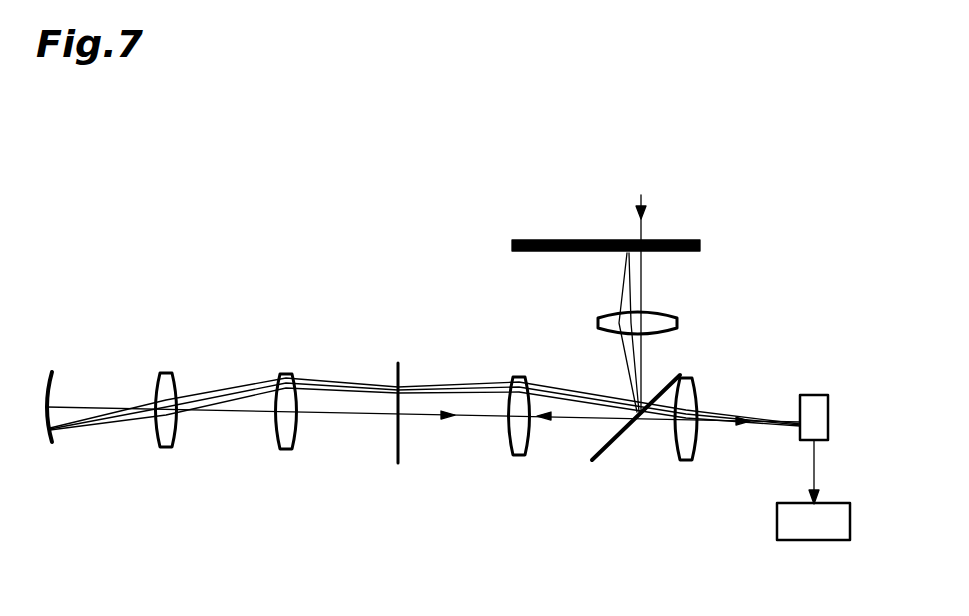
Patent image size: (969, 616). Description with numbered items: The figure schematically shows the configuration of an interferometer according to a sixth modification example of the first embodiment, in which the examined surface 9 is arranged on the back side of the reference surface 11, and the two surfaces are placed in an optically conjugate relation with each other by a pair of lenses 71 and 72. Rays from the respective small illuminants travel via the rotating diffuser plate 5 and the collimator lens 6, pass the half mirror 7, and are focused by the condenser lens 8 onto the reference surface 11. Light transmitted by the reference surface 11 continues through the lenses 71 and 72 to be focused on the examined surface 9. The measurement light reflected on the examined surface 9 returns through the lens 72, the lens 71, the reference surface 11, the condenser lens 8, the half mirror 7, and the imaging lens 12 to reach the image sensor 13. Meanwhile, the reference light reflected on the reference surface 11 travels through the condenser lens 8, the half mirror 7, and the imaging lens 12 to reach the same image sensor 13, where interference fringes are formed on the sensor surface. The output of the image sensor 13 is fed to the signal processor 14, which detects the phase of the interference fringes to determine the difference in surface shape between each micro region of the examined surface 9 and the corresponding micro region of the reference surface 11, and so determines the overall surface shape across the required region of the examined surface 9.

The rotating diffuser plate 5 is at (658, 240).
The collimator lens 6 is at (677, 325).
The half mirror 7 is at (612, 442).
The condenser lens 8 is at (517, 377).
The examined surface 9 is at (50, 390).
The reference surface 11 is at (401, 401).
The imaging lens 12 is at (688, 380).
The image sensor 13 is at (814, 400).
The signal processor 14 is at (801, 534).
The lens 71 is at (288, 374).
The lens 72 is at (165, 372).